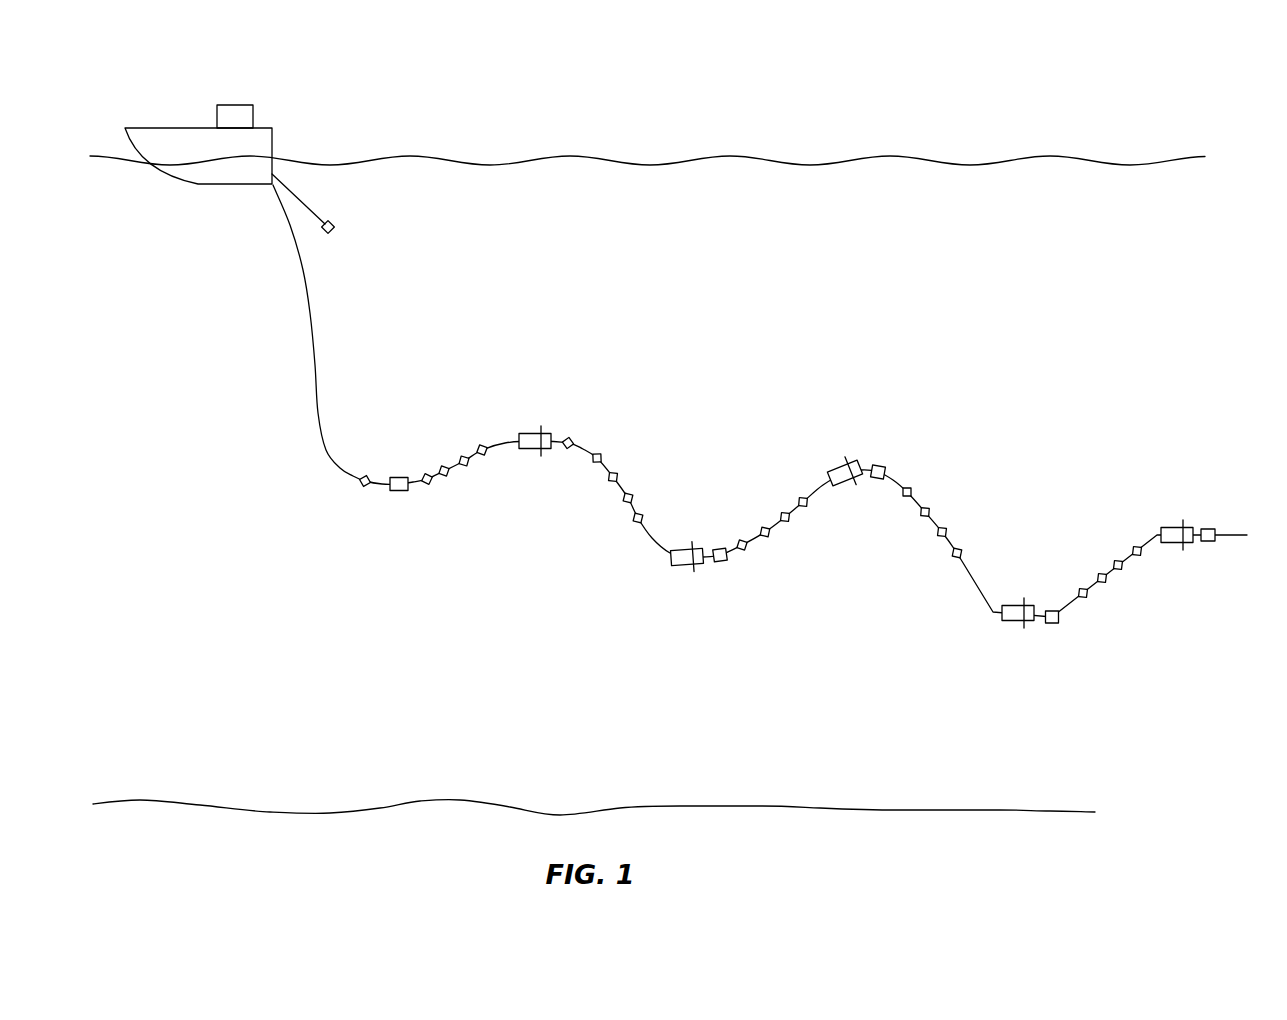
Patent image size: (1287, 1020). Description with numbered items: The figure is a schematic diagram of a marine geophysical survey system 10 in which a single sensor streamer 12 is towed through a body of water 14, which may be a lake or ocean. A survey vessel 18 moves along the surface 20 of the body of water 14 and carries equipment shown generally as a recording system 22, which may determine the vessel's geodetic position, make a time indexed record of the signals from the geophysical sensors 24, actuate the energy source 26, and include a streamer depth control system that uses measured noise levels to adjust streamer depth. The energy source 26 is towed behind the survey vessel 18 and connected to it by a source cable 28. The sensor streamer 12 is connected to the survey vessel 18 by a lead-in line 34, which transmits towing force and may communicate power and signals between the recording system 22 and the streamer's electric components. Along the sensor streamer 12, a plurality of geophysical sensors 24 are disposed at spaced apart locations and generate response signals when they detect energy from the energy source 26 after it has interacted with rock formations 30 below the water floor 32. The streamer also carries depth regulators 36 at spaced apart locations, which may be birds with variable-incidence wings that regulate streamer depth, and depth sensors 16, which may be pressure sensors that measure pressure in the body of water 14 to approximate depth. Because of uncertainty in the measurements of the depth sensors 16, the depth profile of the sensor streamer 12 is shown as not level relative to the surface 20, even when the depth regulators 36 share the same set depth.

The marine geophysical survey system 10 is at (393, 78).
The sensor streamer 12 is at (822, 487).
The body of water 14 is at (886, 231).
The depth sensors 16 is at (397, 477).
The survey vessel 18 is at (167, 127).
The surface of the body of water 20 is at (967, 163).
The recording system 22 is at (237, 104).
The geophysical sensors 24 is at (427, 479).
The energy source 26 is at (333, 220).
The source cable 28 is at (308, 200).
The rock formations 30 is at (886, 865).
The water floor 32 is at (950, 810).
The lead-in line 34 is at (318, 325).
The depth regulators 36 is at (528, 433).